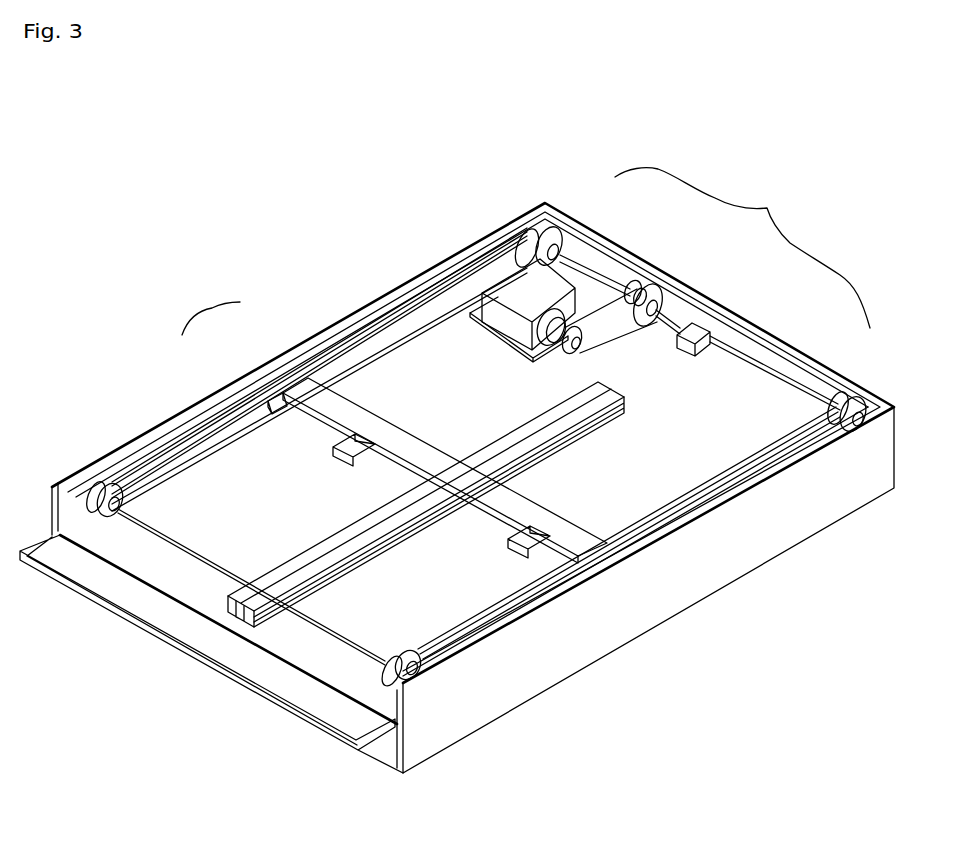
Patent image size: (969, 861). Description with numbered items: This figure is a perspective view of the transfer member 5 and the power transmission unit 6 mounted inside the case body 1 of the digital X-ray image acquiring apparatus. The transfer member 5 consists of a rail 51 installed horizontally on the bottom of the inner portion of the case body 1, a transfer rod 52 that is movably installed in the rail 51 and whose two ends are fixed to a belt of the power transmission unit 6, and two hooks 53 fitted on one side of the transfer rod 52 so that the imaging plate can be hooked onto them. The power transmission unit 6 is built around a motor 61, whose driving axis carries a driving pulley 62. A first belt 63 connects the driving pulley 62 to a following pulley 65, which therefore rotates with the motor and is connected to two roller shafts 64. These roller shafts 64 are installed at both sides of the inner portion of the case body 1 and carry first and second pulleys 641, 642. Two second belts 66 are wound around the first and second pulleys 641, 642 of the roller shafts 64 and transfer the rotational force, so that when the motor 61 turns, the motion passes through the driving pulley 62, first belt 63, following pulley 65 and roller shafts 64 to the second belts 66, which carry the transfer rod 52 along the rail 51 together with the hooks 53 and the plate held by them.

The case body 1 is at (562, 660).
The transfer member 5 is at (211, 311).
The rail 51 is at (240, 612).
The transfer rod 52 is at (305, 378).
The hooks 53 is at (340, 445).
The power transmission unit 6 is at (742, 248).
The motor 61 is at (505, 283).
The driving pulley 62 is at (588, 344).
The first belt 63 is at (633, 283).
The roller shafts 64 is at (720, 350).
The first pulley 641 is at (545, 230).
The second pulley 642 is at (90, 484).
The following pulley 65 is at (650, 288).
The second belts 66 is at (535, 230).